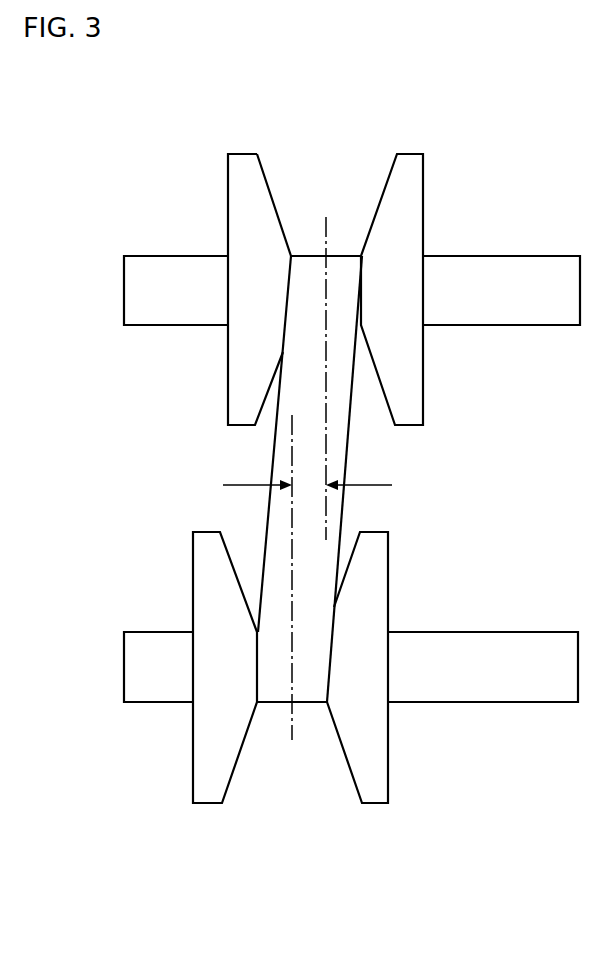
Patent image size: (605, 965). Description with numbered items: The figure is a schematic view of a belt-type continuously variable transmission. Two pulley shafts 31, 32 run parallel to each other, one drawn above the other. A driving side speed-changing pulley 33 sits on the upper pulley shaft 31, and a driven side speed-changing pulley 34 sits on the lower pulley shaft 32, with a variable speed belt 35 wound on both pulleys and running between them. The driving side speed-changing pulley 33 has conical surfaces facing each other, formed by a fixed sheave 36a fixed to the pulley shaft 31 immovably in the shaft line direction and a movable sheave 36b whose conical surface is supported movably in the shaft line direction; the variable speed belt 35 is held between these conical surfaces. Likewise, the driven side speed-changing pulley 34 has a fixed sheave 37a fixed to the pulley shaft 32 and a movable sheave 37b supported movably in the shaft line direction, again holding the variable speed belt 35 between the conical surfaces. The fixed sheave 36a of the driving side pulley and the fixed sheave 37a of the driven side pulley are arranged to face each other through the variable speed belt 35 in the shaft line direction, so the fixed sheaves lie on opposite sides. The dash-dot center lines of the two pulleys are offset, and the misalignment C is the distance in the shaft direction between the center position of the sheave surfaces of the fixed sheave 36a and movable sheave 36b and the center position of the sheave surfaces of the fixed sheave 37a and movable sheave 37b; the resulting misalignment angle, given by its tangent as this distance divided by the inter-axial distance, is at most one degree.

The pulley shaft 31 is at (507, 270).
The pulley shaft 32 is at (506, 688).
The driving side speed-changing pulley 33 is at (385, 243).
The driven side speed-changing pulley 34 is at (231, 721).
The variable speed belt 35 is at (280, 450).
The fixed sheave 36a is at (408, 163).
The movable sheave 36b is at (241, 163).
The fixed sheave 37a is at (204, 800).
The movable sheave 37b is at (378, 800).
The misalignment C is at (307, 472).